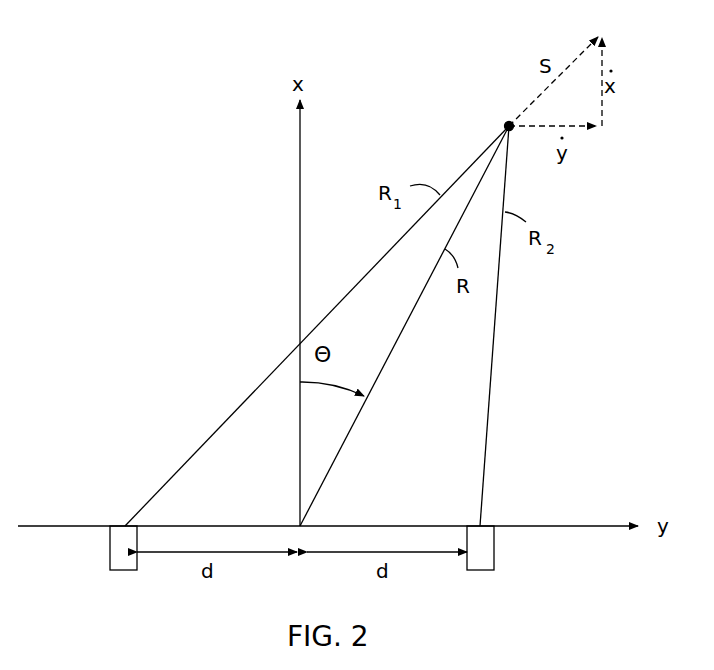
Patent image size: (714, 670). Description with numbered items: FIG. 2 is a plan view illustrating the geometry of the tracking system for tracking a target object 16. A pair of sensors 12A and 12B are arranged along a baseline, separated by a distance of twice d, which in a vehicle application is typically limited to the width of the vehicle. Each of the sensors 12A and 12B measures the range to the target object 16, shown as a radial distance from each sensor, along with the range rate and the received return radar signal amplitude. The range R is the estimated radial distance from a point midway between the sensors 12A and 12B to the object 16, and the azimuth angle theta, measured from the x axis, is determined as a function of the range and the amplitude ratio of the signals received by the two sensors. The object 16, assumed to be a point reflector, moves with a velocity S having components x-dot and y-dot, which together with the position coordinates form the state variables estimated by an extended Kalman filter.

The sensor 12A is at (123, 563).
The sensor 12B is at (481, 563).
The target object 16 is at (500, 124).